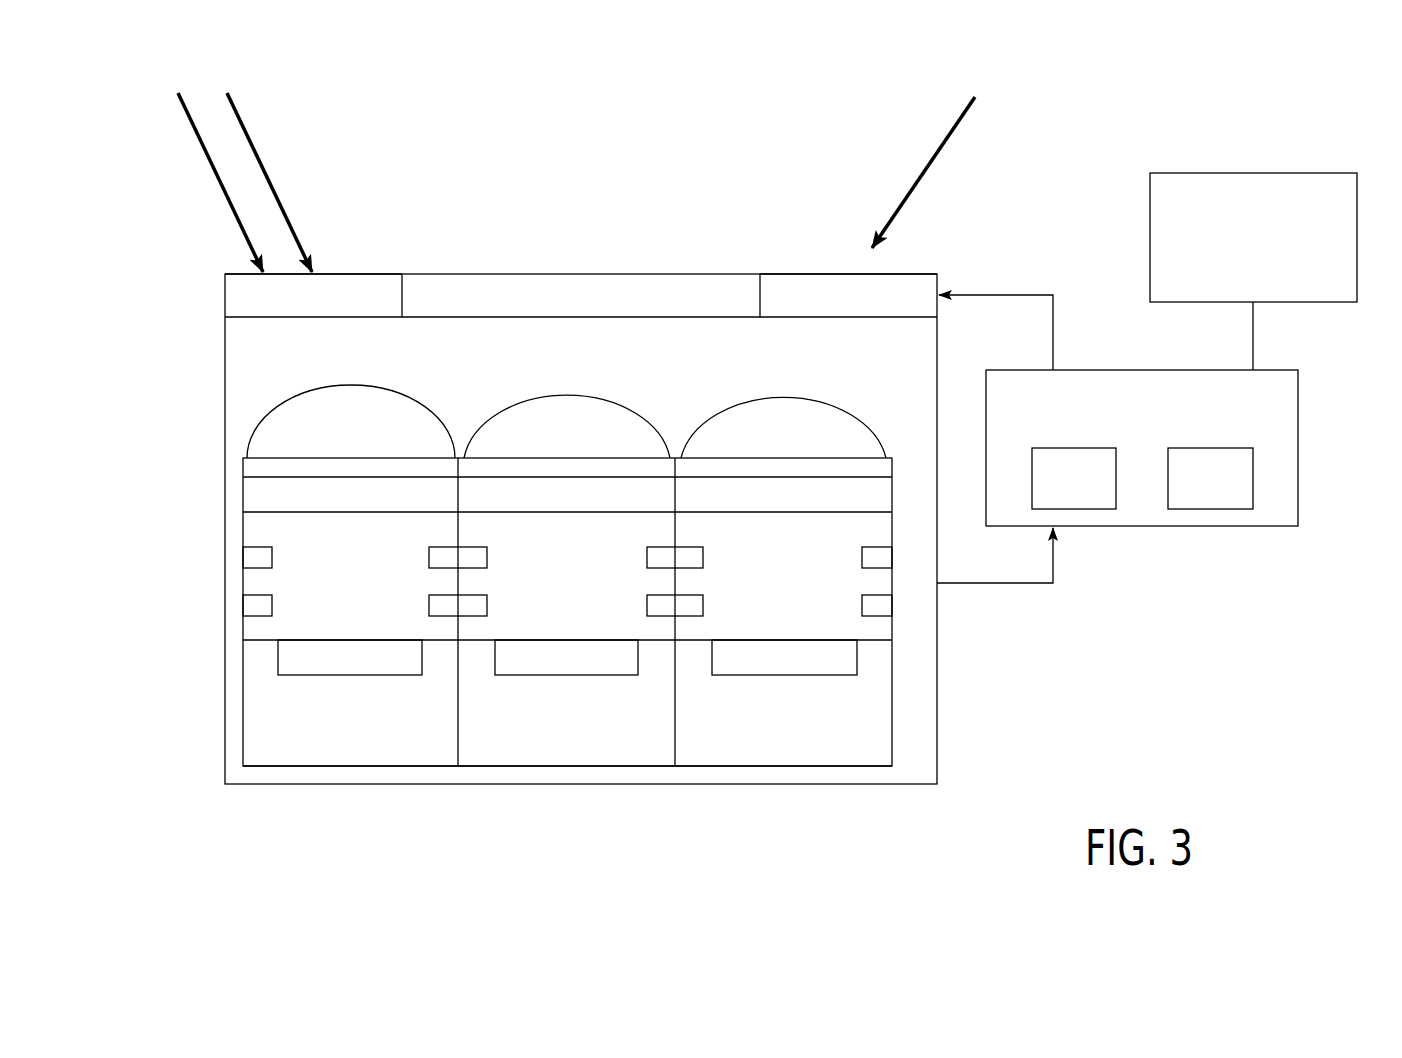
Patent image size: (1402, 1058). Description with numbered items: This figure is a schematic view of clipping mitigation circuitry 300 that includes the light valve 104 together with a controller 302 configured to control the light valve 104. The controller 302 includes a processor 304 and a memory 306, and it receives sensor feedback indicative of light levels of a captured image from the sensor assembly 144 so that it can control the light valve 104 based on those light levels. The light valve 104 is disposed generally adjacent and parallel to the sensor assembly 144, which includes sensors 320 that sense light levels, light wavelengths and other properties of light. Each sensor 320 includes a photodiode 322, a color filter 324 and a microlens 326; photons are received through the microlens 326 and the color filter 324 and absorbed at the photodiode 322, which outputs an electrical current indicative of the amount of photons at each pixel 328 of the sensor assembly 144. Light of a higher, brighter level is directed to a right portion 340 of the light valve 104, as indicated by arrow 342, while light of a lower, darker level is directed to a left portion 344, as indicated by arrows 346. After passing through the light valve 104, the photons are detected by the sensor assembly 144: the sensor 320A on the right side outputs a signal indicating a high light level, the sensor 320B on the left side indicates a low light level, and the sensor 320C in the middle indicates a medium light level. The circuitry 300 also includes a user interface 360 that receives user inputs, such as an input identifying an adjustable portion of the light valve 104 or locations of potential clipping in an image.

The light valve 104 is at (208, 295).
The sensor assembly 144 is at (203, 570).
The clipping mitigation circuitry 300 is at (1067, 118).
The controller 302 is at (1298, 450).
The processor 304 is at (1093, 509).
The memory 306 is at (1213, 509).
The sensors 320 is at (237, 628).
The sensor on the right side 320A is at (793, 788).
The sensor on the left side 320B is at (360, 788).
The sensor in the middle portion 320C is at (577, 788).
The photodiode 322 is at (277, 660).
The color filter 324 is at (252, 493).
The microlens 326 is at (265, 413).
The pixel 328 is at (302, 737).
The right portion 340 is at (803, 275).
The arrow 342 is at (923, 130).
The left portion 344 is at (347, 273).
The arrows 346 is at (202, 177).
The user interface 360 is at (1253, 173).